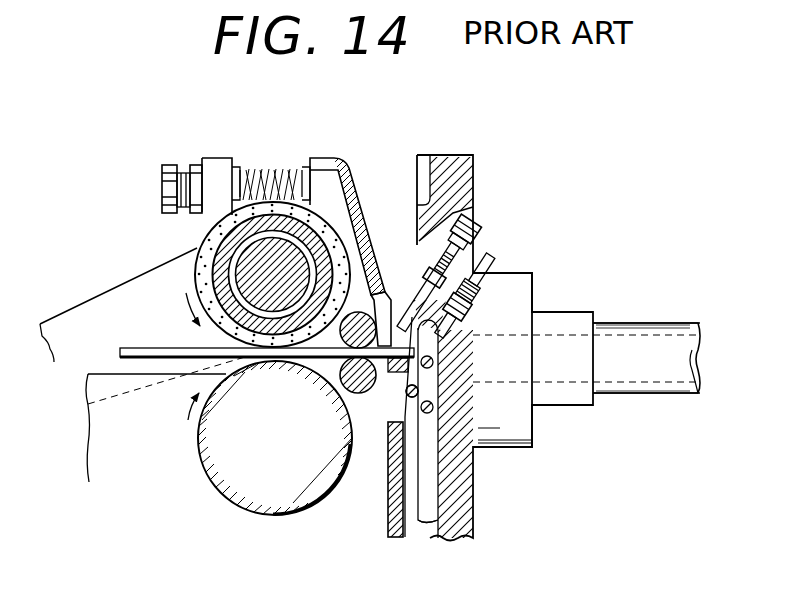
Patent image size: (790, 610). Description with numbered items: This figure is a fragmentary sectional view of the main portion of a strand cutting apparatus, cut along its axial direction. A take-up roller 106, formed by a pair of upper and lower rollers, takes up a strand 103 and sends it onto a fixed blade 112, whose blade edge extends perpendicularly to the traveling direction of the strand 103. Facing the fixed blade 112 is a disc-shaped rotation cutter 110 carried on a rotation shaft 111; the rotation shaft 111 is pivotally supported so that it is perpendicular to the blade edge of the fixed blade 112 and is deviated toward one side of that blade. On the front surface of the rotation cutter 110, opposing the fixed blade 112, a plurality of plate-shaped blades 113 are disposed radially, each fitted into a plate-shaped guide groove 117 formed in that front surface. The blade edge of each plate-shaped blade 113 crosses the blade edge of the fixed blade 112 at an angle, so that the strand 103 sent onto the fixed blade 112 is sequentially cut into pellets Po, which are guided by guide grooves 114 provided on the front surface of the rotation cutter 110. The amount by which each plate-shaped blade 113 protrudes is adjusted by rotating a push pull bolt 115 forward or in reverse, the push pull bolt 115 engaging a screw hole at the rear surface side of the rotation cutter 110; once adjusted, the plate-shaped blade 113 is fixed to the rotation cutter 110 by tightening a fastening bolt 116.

The strand 103 is at (133, 345).
The take-up roller 106 is at (193, 277).
The rotation cutter 110 is at (477, 162).
The rotation shaft 111 is at (660, 396).
The fixed blade 112 is at (395, 425).
The plate-shaped blade 113 is at (403, 335).
The guide groove 114 is at (436, 477).
The push pull bolt 115 is at (480, 228).
The fastening bolt 116 is at (473, 312).
The plate-shaped guide groove 117 is at (475, 338).
The pellet Po is at (411, 445).